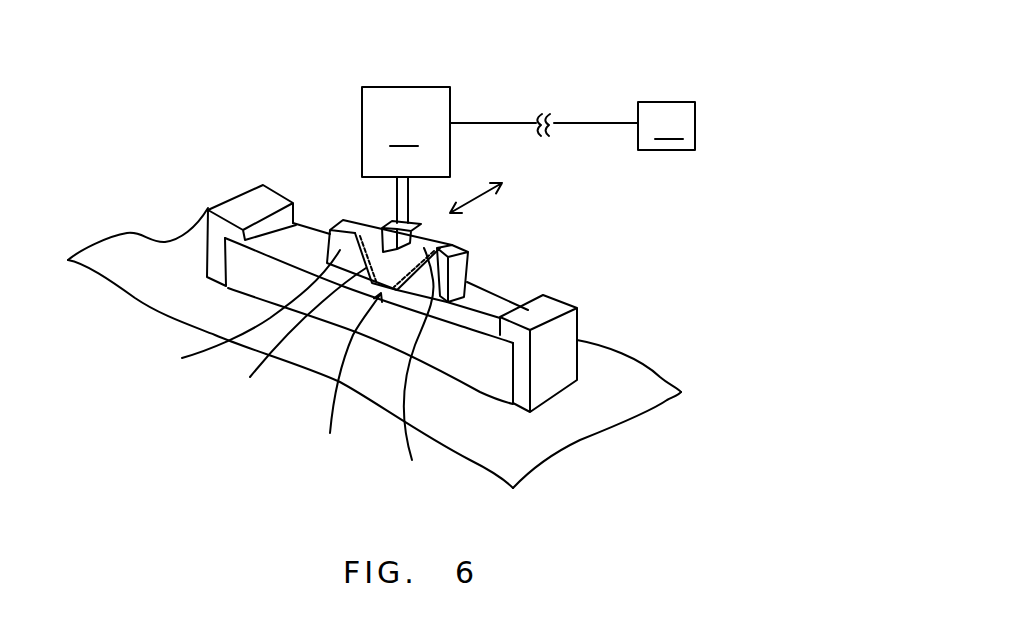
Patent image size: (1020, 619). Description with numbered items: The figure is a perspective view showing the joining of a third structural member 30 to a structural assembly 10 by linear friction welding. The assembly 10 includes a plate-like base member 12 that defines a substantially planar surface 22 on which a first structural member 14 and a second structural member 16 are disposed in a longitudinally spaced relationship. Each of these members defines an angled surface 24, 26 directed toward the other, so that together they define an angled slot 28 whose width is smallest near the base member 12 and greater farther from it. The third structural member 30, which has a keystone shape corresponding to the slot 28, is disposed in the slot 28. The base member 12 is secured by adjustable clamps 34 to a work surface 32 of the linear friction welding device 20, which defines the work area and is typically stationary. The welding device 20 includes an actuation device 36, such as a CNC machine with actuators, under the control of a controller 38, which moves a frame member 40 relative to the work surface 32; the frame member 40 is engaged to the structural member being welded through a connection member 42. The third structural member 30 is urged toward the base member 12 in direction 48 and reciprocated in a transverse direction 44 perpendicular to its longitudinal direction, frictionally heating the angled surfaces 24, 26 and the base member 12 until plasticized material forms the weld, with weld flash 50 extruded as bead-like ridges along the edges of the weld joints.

The structural assembly 10 is at (383, 306).
The base member 12 is at (418, 306).
The first structural member 14 is at (240, 315).
The second structural member 16 is at (460, 272).
The linear friction welding device 20 is at (475, 64).
The substantially planar surface 22 is at (298, 237).
The angled surface 24 is at (288, 337).
The angled surface 26 is at (421, 373).
The angled slot 28 is at (341, 384).
The third structural member 30 is at (380, 262).
The work surface 32 is at (627, 403).
The adjustable clamps 34 is at (235, 193).
The actuation device 36 is at (406, 131).
The controller 38 is at (572, 126).
The frame member 40 is at (393, 197).
The connection member 42 is at (458, 228).
The transverse direction 44 is at (478, 200).
The direction 48 is at (342, 137).
The weld flash 50 is at (440, 248).